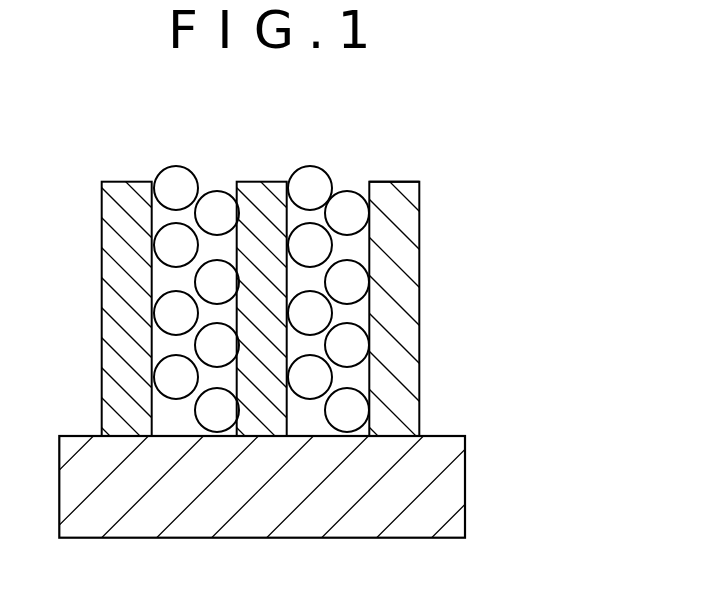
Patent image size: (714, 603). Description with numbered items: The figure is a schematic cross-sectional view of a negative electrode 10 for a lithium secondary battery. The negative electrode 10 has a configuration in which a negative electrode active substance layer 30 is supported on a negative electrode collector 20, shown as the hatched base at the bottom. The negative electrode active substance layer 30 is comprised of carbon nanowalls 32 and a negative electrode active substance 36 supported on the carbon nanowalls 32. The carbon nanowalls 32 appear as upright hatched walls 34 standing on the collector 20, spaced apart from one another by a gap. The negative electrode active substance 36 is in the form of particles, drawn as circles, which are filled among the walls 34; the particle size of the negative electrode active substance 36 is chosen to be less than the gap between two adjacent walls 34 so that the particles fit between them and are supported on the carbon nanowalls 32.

The negative electrode 10 is at (448, 168).
The negative electrode collector 20 is at (437, 490).
The negative electrode active substance layer 30 is at (421, 290).
The carbon nanowalls 32 is at (407, 181).
The walls 34 is at (126, 190).
The negative electrode active substance 36 is at (172, 313).